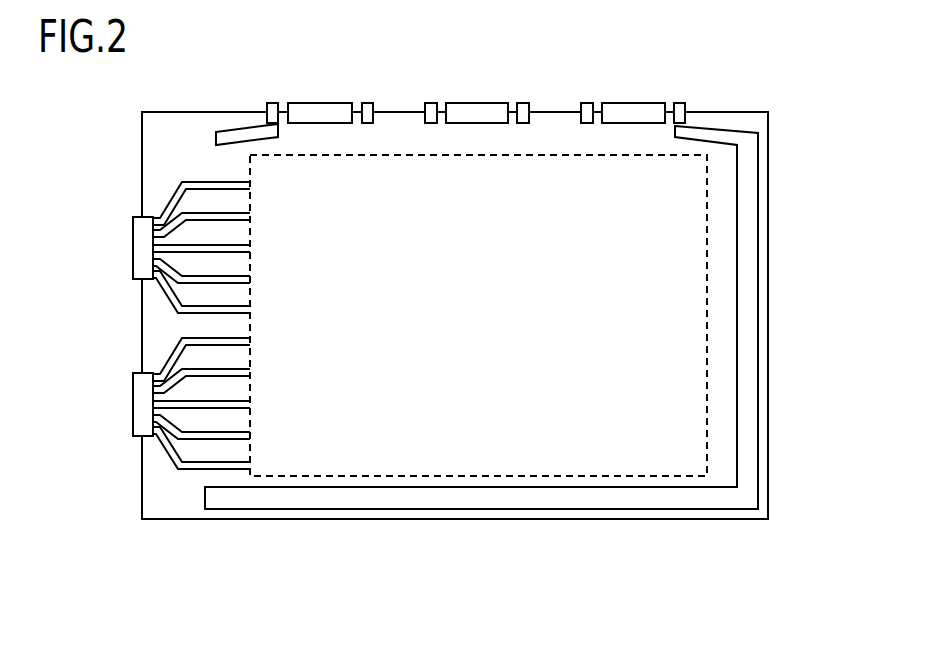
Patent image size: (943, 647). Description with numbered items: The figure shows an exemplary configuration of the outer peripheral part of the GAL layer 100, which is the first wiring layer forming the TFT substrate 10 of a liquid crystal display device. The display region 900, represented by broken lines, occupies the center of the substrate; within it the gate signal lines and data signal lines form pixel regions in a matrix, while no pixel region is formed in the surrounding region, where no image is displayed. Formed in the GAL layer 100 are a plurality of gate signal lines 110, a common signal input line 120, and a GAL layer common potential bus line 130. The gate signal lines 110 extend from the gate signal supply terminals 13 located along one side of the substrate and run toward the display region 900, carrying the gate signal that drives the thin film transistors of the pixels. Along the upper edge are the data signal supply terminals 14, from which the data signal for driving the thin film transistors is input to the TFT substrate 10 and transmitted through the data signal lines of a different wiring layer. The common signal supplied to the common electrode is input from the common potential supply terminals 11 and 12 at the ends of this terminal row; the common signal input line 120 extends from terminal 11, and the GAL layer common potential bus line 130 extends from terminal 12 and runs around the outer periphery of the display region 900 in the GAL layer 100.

The TFT substrate 10 is at (453, 335).
The GAL layer 100 is at (725, 387).
The gate signal lines 110 is at (200, 182).
The common signal input line 120 is at (242, 126).
The GAL layer common potential bus line 130 is at (758, 276).
The common potential supply terminal 11 is at (273, 102).
The common potential supply terminal 12 is at (678, 102).
The gate signal supply terminal 13 is at (133, 245).
The data signal supply terminal 14 is at (335, 102).
The display region 900 is at (487, 477).